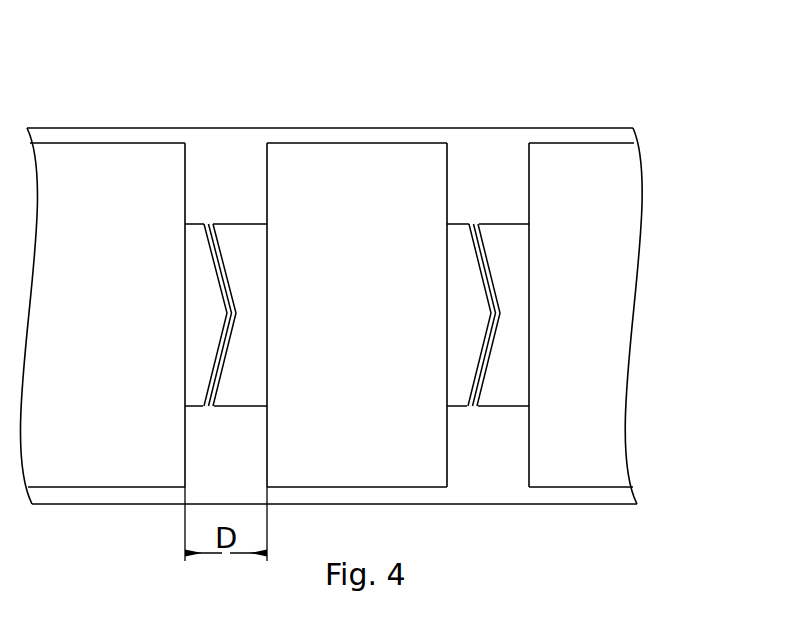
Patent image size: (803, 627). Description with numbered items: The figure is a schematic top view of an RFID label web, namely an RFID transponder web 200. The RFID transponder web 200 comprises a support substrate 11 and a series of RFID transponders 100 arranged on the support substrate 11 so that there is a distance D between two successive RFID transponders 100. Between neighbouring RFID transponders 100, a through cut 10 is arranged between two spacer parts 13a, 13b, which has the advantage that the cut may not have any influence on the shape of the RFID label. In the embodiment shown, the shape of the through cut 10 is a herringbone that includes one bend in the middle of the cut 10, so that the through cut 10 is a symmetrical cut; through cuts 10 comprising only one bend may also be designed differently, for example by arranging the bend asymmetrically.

The RFID transponder web 200 is at (627, 98).
The support substrate 11 is at (127, 496).
The RFID transponder 100 is at (121, 332).
The through cut 10 is at (208, 221).
The spacer part 13a is at (193, 299).
The spacer part 13b is at (245, 289).